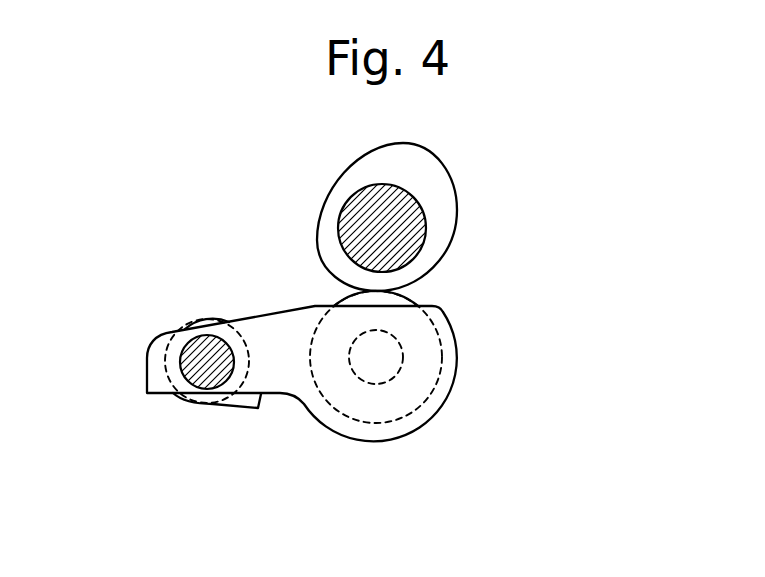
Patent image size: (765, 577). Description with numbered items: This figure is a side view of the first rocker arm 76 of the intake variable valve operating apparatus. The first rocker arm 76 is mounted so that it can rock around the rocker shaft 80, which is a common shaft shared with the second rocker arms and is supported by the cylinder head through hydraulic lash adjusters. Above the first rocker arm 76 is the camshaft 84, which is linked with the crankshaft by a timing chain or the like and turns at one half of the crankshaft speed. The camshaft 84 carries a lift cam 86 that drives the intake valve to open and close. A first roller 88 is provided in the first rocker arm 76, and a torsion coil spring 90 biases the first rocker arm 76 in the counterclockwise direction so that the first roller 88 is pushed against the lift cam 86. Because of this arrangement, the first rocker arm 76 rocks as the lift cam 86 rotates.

The first rocker arm 76 is at (428, 410).
The rocker shaft 80 is at (181, 367).
The camshaft 84 is at (350, 208).
The lift cam 86 is at (430, 173).
The first roller 88 is at (367, 413).
The torsion coil spring 90 is at (237, 400).